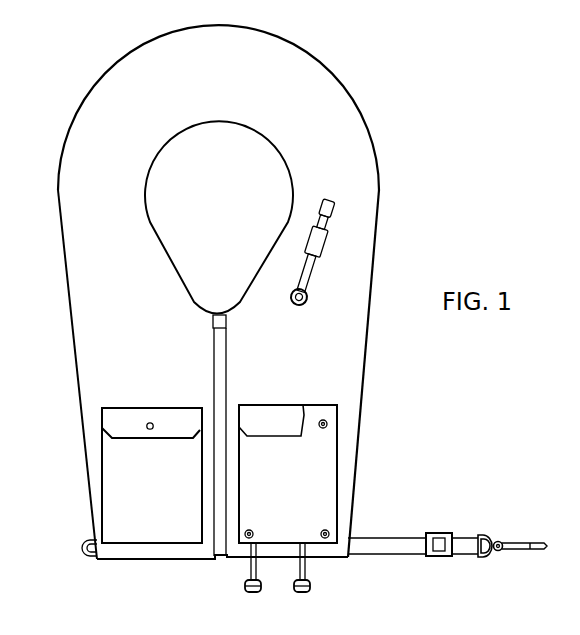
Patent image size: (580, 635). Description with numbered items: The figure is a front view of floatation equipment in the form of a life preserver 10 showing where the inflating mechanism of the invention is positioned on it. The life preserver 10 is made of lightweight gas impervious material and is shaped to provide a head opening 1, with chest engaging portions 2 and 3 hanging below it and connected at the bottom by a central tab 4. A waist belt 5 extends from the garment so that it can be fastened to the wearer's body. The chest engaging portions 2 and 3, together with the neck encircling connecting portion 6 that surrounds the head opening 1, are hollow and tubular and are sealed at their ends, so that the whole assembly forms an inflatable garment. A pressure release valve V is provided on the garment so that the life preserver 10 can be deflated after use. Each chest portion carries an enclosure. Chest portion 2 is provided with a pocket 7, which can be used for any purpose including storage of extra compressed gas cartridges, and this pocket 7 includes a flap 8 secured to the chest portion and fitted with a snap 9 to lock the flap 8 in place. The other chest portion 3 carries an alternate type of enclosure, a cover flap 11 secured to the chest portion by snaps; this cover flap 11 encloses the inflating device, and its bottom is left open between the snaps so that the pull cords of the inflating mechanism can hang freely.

The head opening 1 is at (215, 191).
The chest engaging portion 2 is at (90, 352).
The chest engaging portion 3 is at (353, 337).
The central tab 4 is at (217, 313).
The waist belt 5 is at (410, 537).
The neck encircling connecting portion 6 is at (340, 100).
The pocket 7 is at (138, 465).
The flap 8 is at (115, 414).
The snap 9 is at (150, 422).
The life preserver 10 is at (93, 332).
The cover flap 11 is at (323, 458).
The pressure release valve V is at (315, 263).